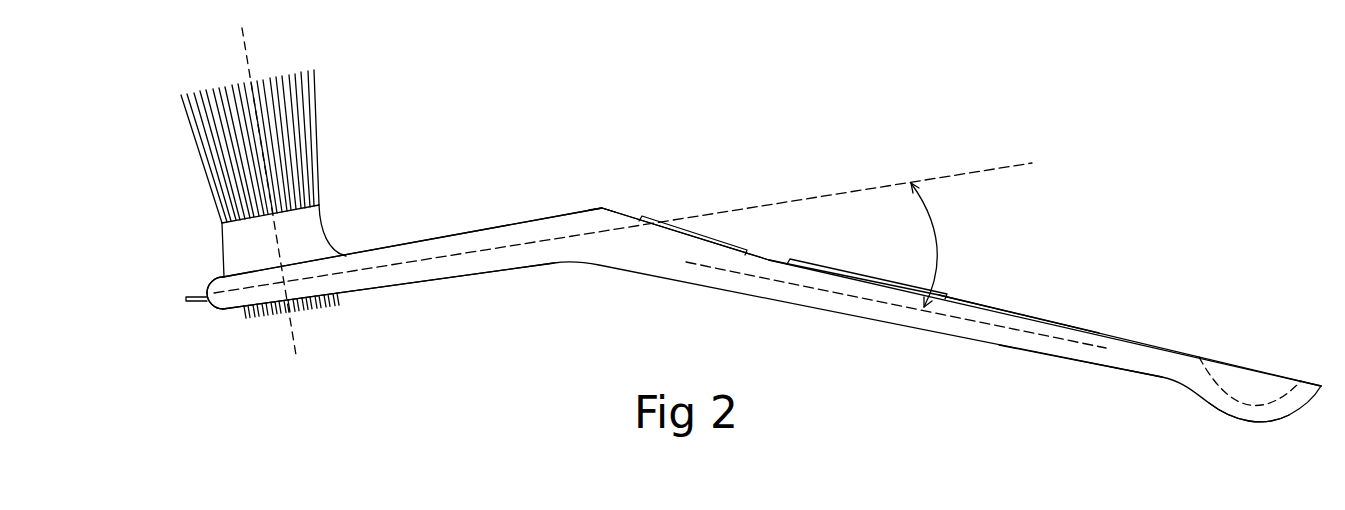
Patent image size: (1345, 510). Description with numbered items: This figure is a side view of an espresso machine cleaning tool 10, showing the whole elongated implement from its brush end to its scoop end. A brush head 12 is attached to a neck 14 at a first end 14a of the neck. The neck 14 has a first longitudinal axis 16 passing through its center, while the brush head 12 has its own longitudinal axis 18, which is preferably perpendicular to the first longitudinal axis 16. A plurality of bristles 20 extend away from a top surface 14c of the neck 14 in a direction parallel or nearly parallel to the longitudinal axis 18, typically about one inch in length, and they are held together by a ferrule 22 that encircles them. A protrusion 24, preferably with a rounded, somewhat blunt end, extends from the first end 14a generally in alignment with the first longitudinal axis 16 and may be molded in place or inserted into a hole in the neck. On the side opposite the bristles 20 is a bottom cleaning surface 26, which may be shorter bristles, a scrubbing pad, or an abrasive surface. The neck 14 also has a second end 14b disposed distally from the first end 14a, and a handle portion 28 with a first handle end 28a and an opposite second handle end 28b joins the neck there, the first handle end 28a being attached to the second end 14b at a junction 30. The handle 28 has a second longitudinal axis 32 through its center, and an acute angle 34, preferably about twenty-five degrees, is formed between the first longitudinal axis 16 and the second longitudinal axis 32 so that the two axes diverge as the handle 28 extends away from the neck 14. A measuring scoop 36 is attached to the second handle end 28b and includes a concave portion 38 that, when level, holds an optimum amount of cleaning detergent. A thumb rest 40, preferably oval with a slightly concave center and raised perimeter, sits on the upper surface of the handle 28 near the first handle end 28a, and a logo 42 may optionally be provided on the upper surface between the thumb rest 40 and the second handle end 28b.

The espresso machine cleaning tool 10 is at (756, 313).
The brush head 12 is at (273, 197).
The neck 14 is at (418, 262).
The first end of the neck 14a is at (225, 313).
The second end of the neck 14b is at (583, 253).
The top surface of the neck 14c is at (467, 235).
The first longitudinal axis 16 is at (802, 199).
The longitudinal axis of the brush head 18 is at (250, 60).
The bristles 20 is at (193, 130).
The ferrule 22 is at (247, 240).
The protrusion 24 is at (195, 304).
The bottom cleaning surface 26 is at (320, 317).
The handle portion 28 is at (1045, 315).
The first handle end 28a is at (655, 258).
The second handle end 28b is at (1153, 362).
The junction 30 is at (603, 207).
The second longitudinal axis 32 is at (1022, 338).
The acute angle 34 is at (940, 242).
The measuring scoop 36 is at (1247, 425).
The concave portion 38 is at (1252, 383).
The thumb rest 40 is at (687, 233).
The logo 42 is at (1002, 312).